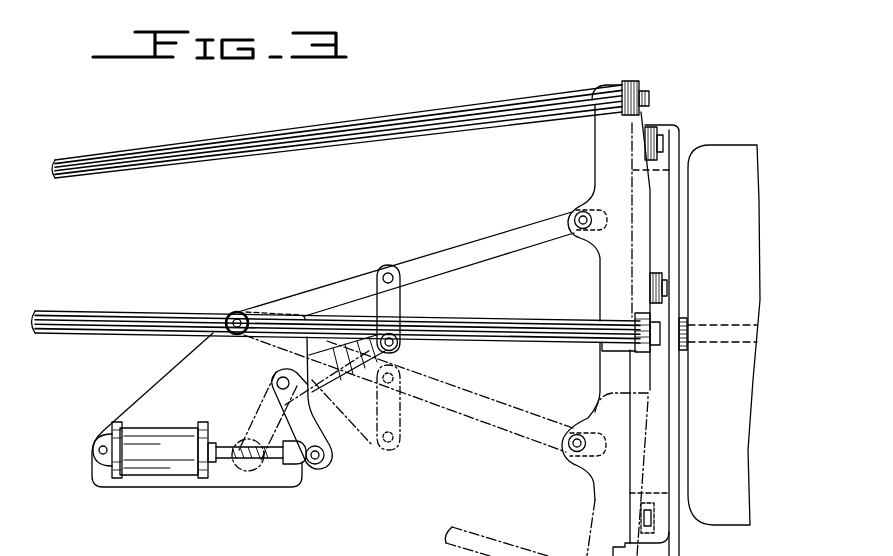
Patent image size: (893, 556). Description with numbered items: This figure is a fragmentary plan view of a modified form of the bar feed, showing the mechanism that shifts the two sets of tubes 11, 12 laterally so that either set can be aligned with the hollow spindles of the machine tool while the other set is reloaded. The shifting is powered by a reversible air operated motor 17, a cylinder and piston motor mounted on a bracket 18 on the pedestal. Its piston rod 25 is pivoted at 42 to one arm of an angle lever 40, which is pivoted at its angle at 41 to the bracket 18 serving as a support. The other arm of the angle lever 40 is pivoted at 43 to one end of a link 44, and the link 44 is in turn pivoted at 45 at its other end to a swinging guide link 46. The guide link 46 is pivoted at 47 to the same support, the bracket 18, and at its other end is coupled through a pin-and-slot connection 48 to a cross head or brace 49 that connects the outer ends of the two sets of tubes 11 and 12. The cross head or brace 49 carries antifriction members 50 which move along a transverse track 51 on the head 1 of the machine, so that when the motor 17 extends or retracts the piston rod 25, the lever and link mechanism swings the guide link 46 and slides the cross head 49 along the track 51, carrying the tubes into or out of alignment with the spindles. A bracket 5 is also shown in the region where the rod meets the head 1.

The head 1 is at (722, 152).
The threaded stud / bracket on frame 5 is at (668, 324).
The set of tubes 11 is at (510, 322).
The set of tubes 12 is at (386, 138).
The reversible air operated motor 17 is at (147, 435).
The bracket 18 is at (158, 372).
The piston rod 25 is at (226, 456).
The angle lever 40 is at (320, 378).
The pivot 41 is at (276, 383).
The pivot 42 is at (325, 454).
The pivot 43 is at (402, 346).
The link 44 is at (401, 307).
The pivot 45 is at (392, 270).
The swinging guide link 46 is at (462, 247).
The pivot 47 is at (236, 311).
The pin-and-slot connection 48 is at (581, 231).
The cross head or brace 49 is at (596, 158).
The antifriction members 50 is at (657, 129).
The transverse track 51 is at (640, 370).